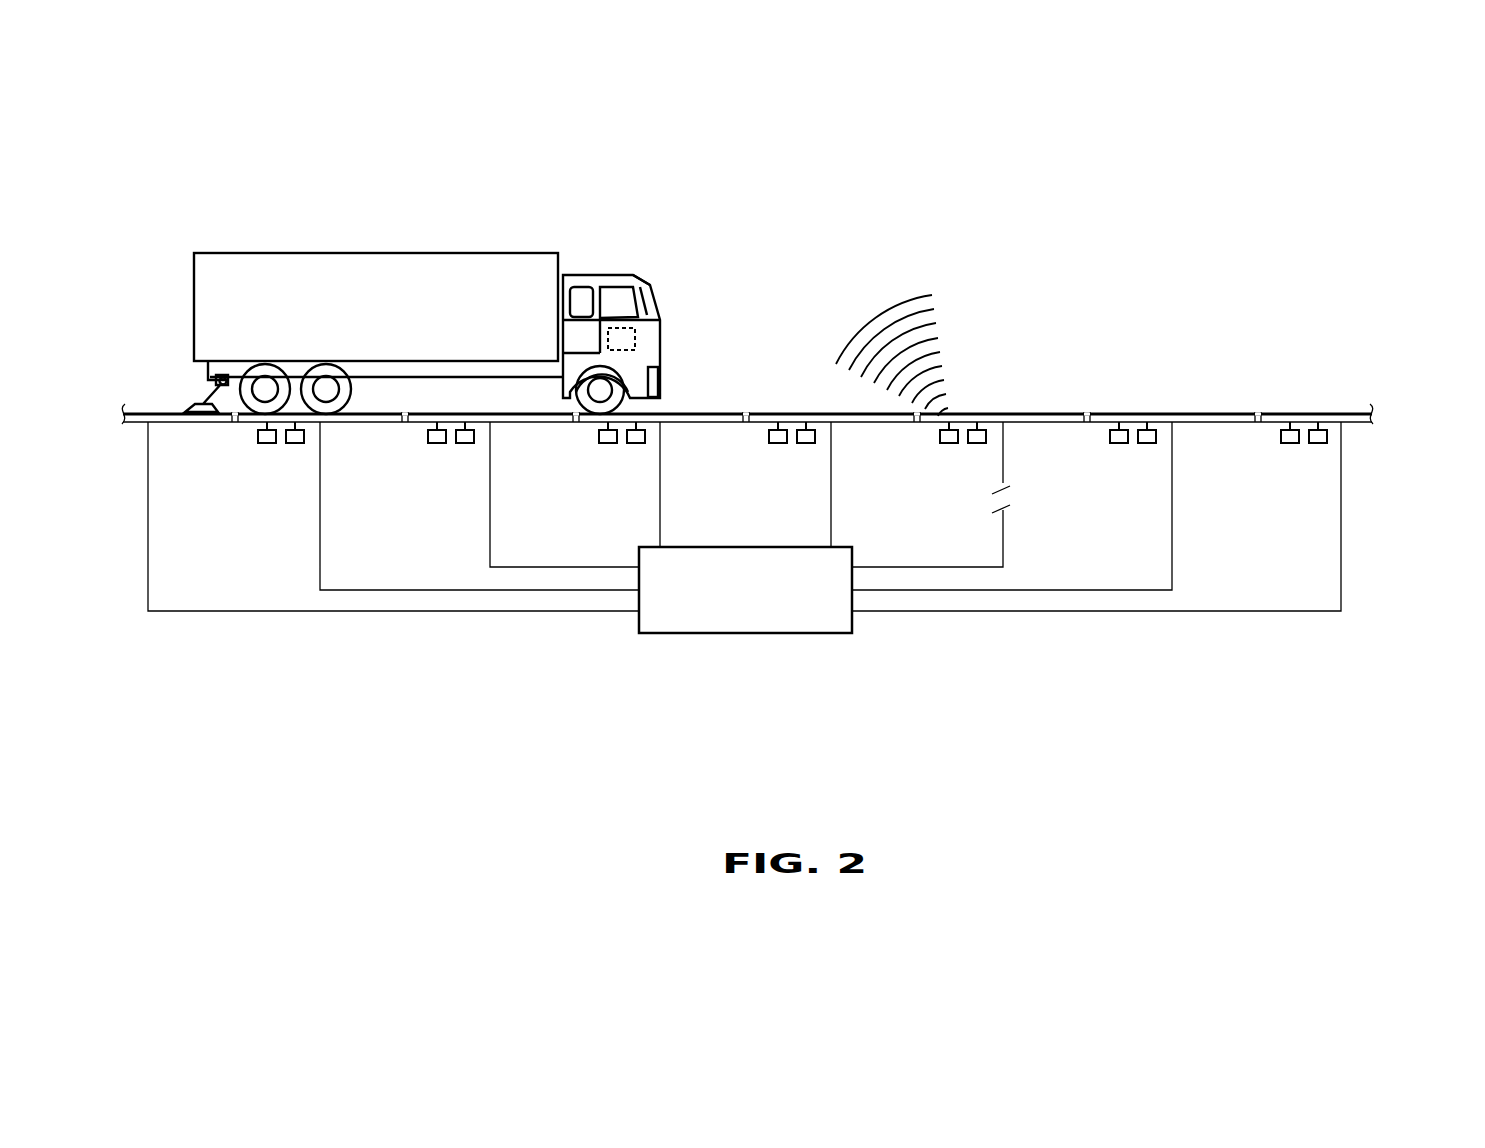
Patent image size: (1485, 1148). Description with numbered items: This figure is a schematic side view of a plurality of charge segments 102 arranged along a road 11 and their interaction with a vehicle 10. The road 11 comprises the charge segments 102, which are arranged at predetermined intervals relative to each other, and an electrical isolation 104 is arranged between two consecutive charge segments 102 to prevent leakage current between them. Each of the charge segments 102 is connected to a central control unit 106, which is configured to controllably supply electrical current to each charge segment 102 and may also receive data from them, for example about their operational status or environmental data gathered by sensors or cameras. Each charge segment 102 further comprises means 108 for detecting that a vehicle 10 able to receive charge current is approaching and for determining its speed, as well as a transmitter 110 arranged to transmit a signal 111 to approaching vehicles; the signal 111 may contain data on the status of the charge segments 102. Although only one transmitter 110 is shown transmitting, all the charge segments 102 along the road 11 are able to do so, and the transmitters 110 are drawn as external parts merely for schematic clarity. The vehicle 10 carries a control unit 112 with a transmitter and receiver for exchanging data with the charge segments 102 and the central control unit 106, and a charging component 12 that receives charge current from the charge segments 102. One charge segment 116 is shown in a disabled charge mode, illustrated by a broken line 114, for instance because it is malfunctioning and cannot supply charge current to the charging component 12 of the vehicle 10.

The vehicle 10 is at (638, 189).
The road 11 is at (1180, 413).
The charging component 12 is at (178, 383).
The charge segment 102 is at (188, 422).
The electrical isolation 104 is at (230, 422).
The central control unit 106 is at (846, 546).
The means for detecting an approaching vehicle 108 is at (295, 443).
The transmitter 110 is at (267, 443).
The signal 111 is at (908, 302).
The control unit 112 is at (645, 338).
The broken line 114 is at (997, 497).
The charge segment in disabled charge mode 116 is at (1068, 413).